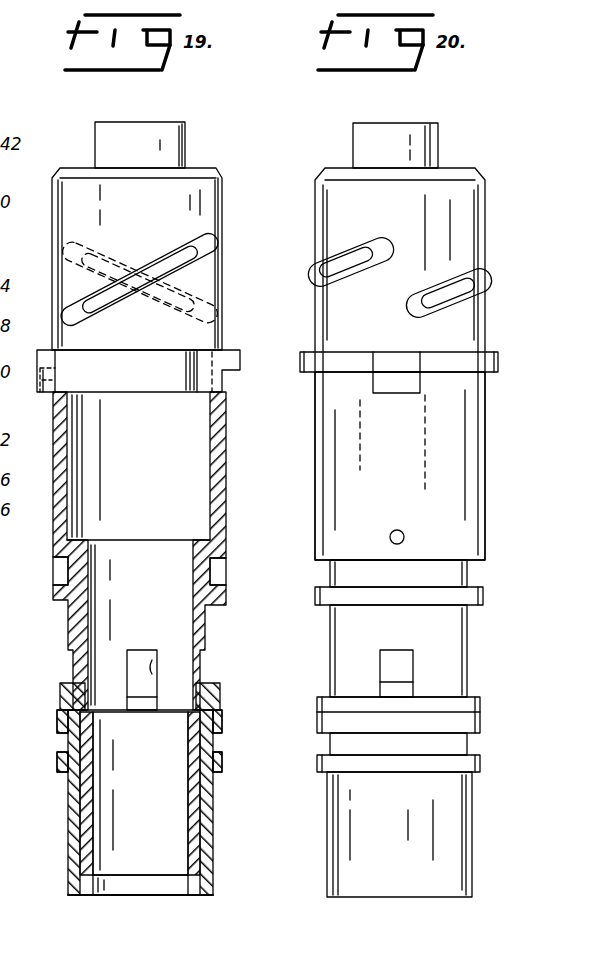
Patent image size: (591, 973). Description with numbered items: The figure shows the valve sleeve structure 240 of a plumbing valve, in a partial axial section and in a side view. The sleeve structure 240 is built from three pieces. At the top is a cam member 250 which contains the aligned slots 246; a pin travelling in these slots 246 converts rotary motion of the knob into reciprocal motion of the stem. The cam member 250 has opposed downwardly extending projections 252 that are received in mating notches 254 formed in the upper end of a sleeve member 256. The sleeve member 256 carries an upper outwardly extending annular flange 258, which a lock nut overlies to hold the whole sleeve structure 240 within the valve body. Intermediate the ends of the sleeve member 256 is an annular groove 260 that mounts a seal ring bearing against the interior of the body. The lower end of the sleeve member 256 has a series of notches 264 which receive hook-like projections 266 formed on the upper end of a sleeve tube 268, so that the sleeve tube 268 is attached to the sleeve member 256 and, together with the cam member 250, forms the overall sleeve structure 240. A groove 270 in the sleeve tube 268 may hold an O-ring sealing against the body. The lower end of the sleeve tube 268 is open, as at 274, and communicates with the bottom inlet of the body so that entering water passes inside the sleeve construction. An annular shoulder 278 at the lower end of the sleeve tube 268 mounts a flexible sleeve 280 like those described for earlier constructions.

In FIG. 19, the sleeve structure 240 is at (208, 155).
In FIG. 20, the sleeve structure 240 is at (467, 158).
In FIG. 19, the slots 246 is at (170, 258).
In FIG. 20, the slots 246 is at (418, 296).
In FIG. 19, the cam member 250 is at (222, 205).
In FIG. 20, the cam member 250 is at (335, 185).
In FIG. 19, the projections 252 is at (198, 382).
In FIG. 20, the projections 252 is at (395, 388).
In FIG. 19, the notches 254 is at (222, 377).
In FIG. 20, the notches 254 is at (403, 380).
In FIG. 19, the sleeve member 256 is at (226, 446).
In FIG. 20, the sleeve member 256 is at (318, 472).
In FIG. 20, the annular flange 258 is at (305, 352).
In FIG. 19, the annular groove 260 is at (215, 582).
In FIG. 20, the annular groove 260 is at (330, 593).
In FIG. 19, the notches 264 is at (197, 660).
In FIG. 20, the notches 264 is at (400, 642).
In FIG. 19, the hook-like projections 266 is at (62, 695).
In FIG. 20, the hook-like projections 266 is at (385, 686).
In FIG. 19, the sleeve tube 268 is at (68, 812).
In FIG. 20, the sleeve tube 268 is at (378, 882).
In FIG. 19, the groove 270 is at (60, 742).
In FIG. 20, the groove 270 is at (330, 742).
In FIG. 19, the open lower end 274 is at (160, 888).
In FIG. 19, the annular shoulder 278 is at (190, 872).
In FIG. 19, the flexible sleeve 280 is at (200, 828).